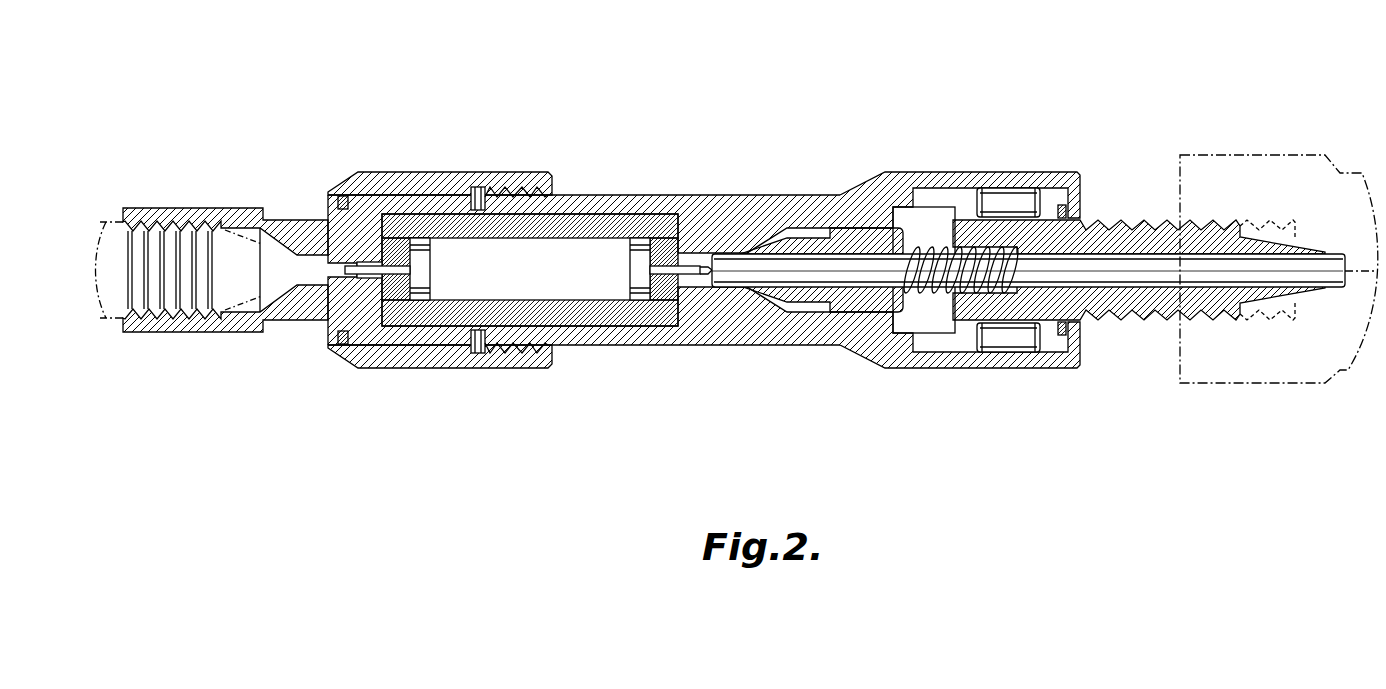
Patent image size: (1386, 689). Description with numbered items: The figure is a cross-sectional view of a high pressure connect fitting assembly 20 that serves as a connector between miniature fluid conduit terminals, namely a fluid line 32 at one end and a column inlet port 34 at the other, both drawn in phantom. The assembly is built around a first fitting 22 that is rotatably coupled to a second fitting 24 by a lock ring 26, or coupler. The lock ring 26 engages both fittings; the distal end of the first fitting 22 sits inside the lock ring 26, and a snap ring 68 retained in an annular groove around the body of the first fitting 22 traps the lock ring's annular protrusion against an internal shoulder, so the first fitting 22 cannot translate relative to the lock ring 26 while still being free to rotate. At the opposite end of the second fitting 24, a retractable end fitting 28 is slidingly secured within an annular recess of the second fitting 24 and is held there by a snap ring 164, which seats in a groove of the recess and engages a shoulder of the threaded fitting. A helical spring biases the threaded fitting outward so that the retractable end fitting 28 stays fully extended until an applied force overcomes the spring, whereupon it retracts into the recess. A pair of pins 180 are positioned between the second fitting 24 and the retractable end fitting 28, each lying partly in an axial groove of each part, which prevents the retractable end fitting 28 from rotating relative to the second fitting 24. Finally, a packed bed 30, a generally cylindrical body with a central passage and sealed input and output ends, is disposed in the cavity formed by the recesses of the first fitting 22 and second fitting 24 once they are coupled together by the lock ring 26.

The high pressure connect fitting assembly 20 is at (838, 84).
The first fitting 22 is at (189, 190).
The second fitting 24 is at (909, 155).
The lock ring 26 is at (460, 172).
The retractable end fitting 28 is at (1155, 165).
The packed bed 30 is at (606, 213).
The fluid line 32 is at (115, 316).
The column inlet port 34 is at (1218, 384).
The snap ring 68 is at (343, 193).
The snap ring 164 is at (1061, 204).
The pins 180 is at (1005, 194).